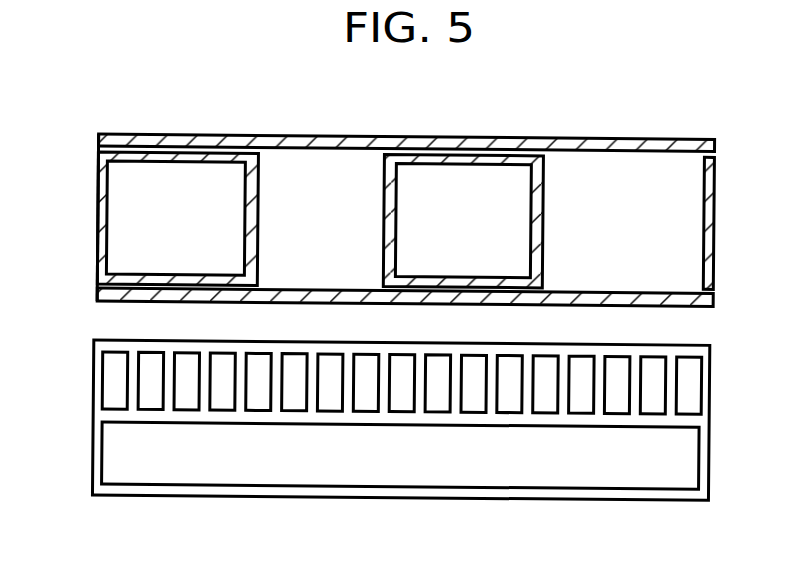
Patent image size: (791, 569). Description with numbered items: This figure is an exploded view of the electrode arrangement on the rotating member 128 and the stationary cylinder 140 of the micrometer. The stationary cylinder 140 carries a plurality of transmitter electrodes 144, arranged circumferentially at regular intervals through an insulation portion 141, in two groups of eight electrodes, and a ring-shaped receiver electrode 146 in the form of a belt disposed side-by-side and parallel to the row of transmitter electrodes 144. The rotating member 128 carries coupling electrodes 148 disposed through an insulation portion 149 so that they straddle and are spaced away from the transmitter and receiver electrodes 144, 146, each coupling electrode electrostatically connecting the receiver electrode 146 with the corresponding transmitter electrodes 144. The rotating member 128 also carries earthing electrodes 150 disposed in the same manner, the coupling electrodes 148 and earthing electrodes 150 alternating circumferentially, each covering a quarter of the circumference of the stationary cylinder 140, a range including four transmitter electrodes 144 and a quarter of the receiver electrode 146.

The rotating member 128 is at (687, 106).
The coupling electrodes 148 is at (158, 169).
The insulation portion 149 is at (541, 213).
The earthing electrodes 150 is at (297, 162).
The stationary cylinder 140 is at (602, 497).
The insulation portion 141 is at (686, 350).
The transmitter electrodes 144 is at (120, 362).
The receiver electrode 146 is at (693, 447).